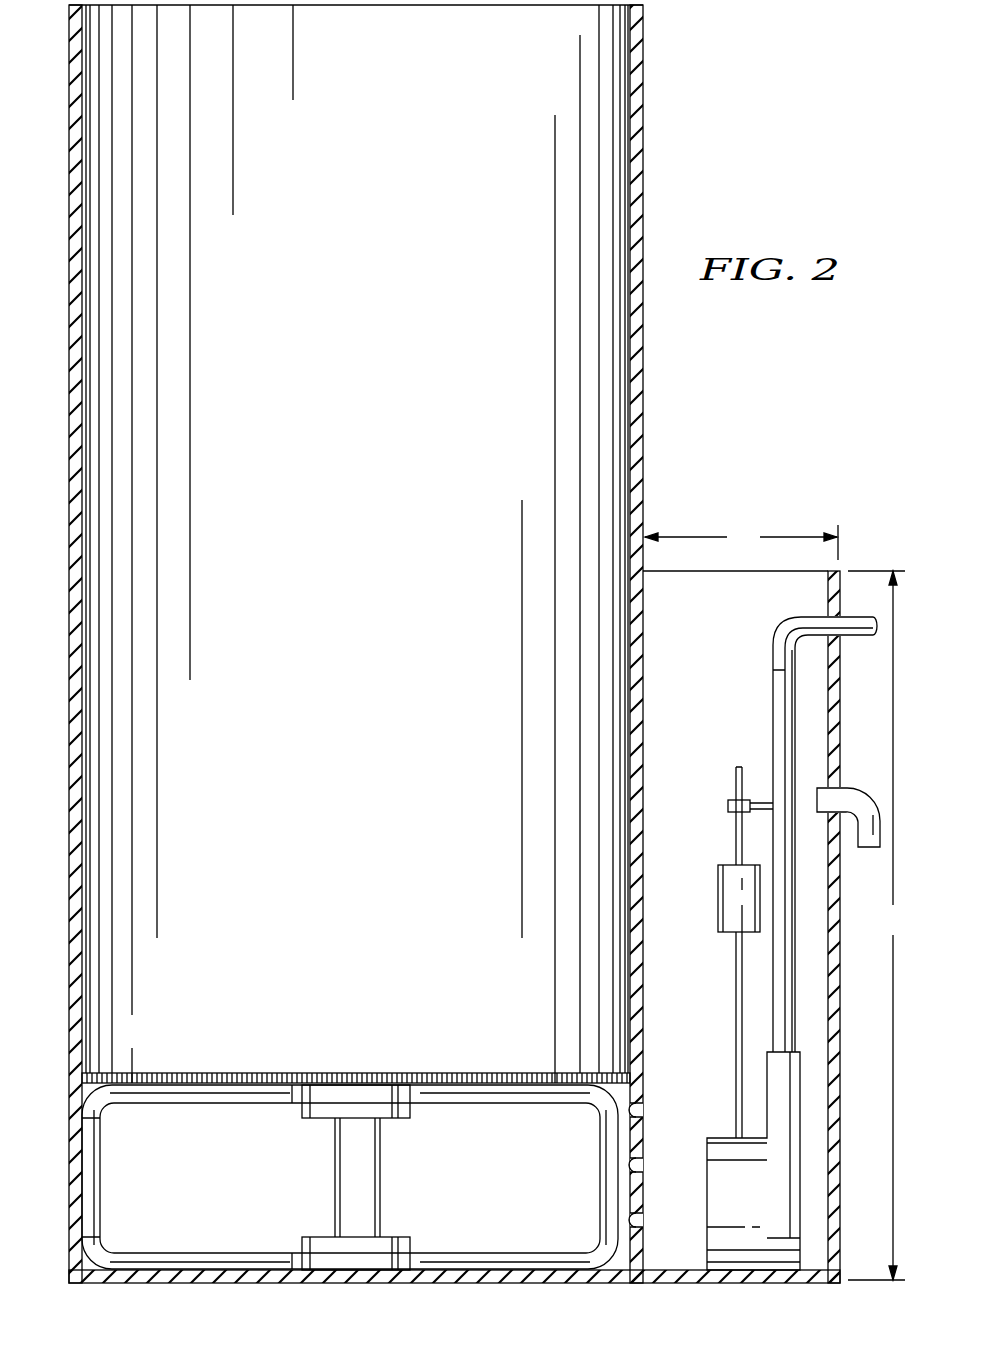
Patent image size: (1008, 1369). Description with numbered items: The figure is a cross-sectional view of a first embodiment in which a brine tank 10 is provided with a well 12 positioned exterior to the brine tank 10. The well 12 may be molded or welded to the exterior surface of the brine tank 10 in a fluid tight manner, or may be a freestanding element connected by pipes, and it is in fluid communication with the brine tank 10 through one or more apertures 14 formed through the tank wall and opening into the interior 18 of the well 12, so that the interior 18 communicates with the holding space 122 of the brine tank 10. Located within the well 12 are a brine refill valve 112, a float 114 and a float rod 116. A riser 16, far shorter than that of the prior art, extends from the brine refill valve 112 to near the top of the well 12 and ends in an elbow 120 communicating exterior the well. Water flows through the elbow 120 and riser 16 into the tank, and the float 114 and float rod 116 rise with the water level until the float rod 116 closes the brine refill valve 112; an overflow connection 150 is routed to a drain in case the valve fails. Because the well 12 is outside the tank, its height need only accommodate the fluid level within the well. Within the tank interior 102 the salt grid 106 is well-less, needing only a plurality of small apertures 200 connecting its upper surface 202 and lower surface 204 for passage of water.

The brine tank 10 is at (680, 393).
The well 12 is at (808, 475).
The apertures 14 is at (643, 1117).
The riser 16 is at (773, 700).
The interior of well 18 is at (722, 649).
The tank interior 102 is at (380, 463).
The salt grid 106 is at (523, 1073).
The brine refill valve 112 is at (716, 1138).
The float 114 is at (718, 900).
The float rod 116 is at (736, 1000).
The elbow 120 is at (785, 622).
The holding space 122 is at (214, 1187).
The overflow connection 150 is at (877, 800).
The small apertures 200 is at (198, 1073).
The upper surface 202 is at (150, 1073).
The lower surface 204 is at (148, 1085).